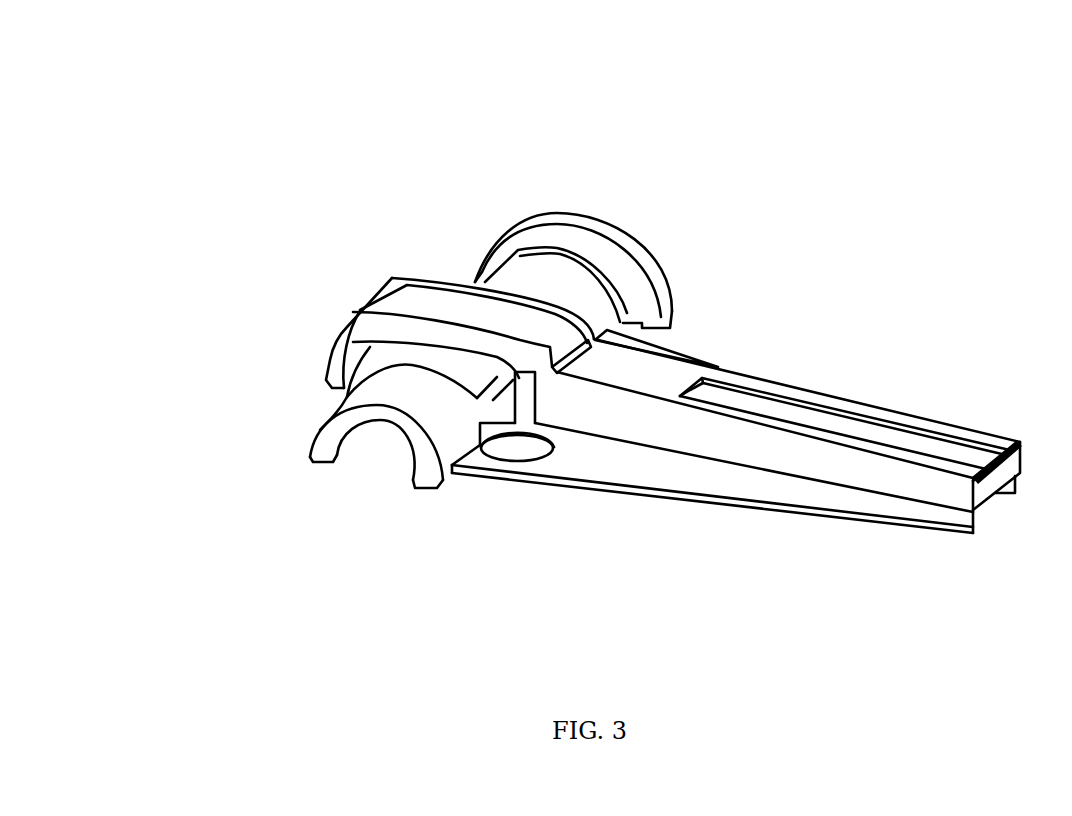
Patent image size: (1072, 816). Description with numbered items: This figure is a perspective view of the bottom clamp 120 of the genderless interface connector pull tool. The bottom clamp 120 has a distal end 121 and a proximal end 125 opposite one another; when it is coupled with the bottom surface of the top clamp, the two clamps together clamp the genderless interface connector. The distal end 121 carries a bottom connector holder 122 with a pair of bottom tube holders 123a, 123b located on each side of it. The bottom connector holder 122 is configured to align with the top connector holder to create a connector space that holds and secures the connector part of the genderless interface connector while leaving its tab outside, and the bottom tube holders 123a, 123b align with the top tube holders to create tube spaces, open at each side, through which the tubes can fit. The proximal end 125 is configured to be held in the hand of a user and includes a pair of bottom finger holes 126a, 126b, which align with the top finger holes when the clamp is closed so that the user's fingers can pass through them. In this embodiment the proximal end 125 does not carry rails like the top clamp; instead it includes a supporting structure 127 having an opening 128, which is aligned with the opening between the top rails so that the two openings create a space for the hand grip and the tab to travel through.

The bottom clamp 120 is at (126, 128).
The distal end 121 is at (347, 342).
The bottom connector holder 122 is at (432, 316).
The bottom tube holder 123a is at (592, 255).
The bottom tube holder 123b is at (392, 423).
The proximal end 125 is at (724, 476).
The bottom finger hole 126a is at (612, 328).
The bottom finger hole 126b is at (520, 448).
The supporting structure 127 is at (880, 480).
The opening 128 is at (870, 433).